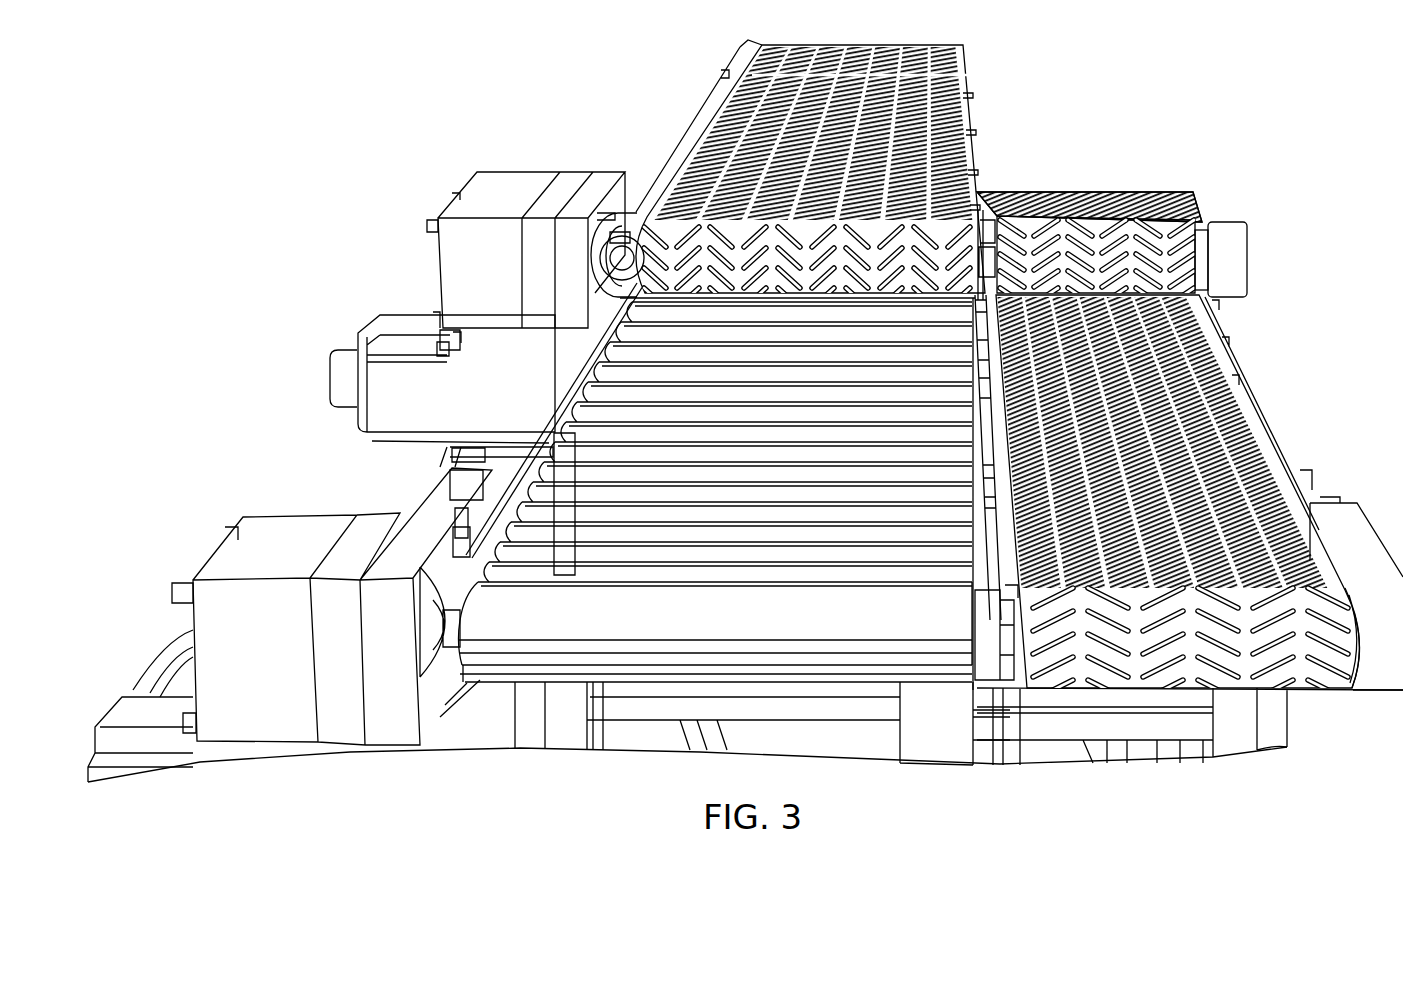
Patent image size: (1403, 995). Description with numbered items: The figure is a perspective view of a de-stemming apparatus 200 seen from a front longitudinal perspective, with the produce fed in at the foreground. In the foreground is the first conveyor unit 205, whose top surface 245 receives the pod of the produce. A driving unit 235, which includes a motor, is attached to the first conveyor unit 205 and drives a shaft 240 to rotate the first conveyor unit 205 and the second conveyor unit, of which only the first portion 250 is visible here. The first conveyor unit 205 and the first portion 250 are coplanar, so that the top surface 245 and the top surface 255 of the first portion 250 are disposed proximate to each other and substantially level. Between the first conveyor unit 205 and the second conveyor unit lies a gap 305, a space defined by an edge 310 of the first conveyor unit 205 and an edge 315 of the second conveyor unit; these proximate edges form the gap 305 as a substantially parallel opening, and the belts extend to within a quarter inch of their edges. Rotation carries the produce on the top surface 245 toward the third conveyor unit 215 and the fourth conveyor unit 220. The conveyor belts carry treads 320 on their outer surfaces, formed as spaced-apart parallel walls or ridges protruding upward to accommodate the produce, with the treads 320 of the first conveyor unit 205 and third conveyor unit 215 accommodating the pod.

The de-stemming apparatus 200 is at (315, 165).
The first conveyor unit 205 is at (542, 435).
The third conveyor unit 215 is at (722, 68).
The fourth conveyor unit 220 is at (1203, 220).
The driving unit 235 is at (505, 180).
The shaft 240 is at (990, 255).
The top surface 245 is at (581, 424).
The first portion 250 is at (1275, 465).
The top surface 255 is at (1228, 420).
The gap 305 is at (984, 431).
The edge 310 is at (970, 578).
The edge 315 is at (682, 240).
The treads 320 is at (508, 653).